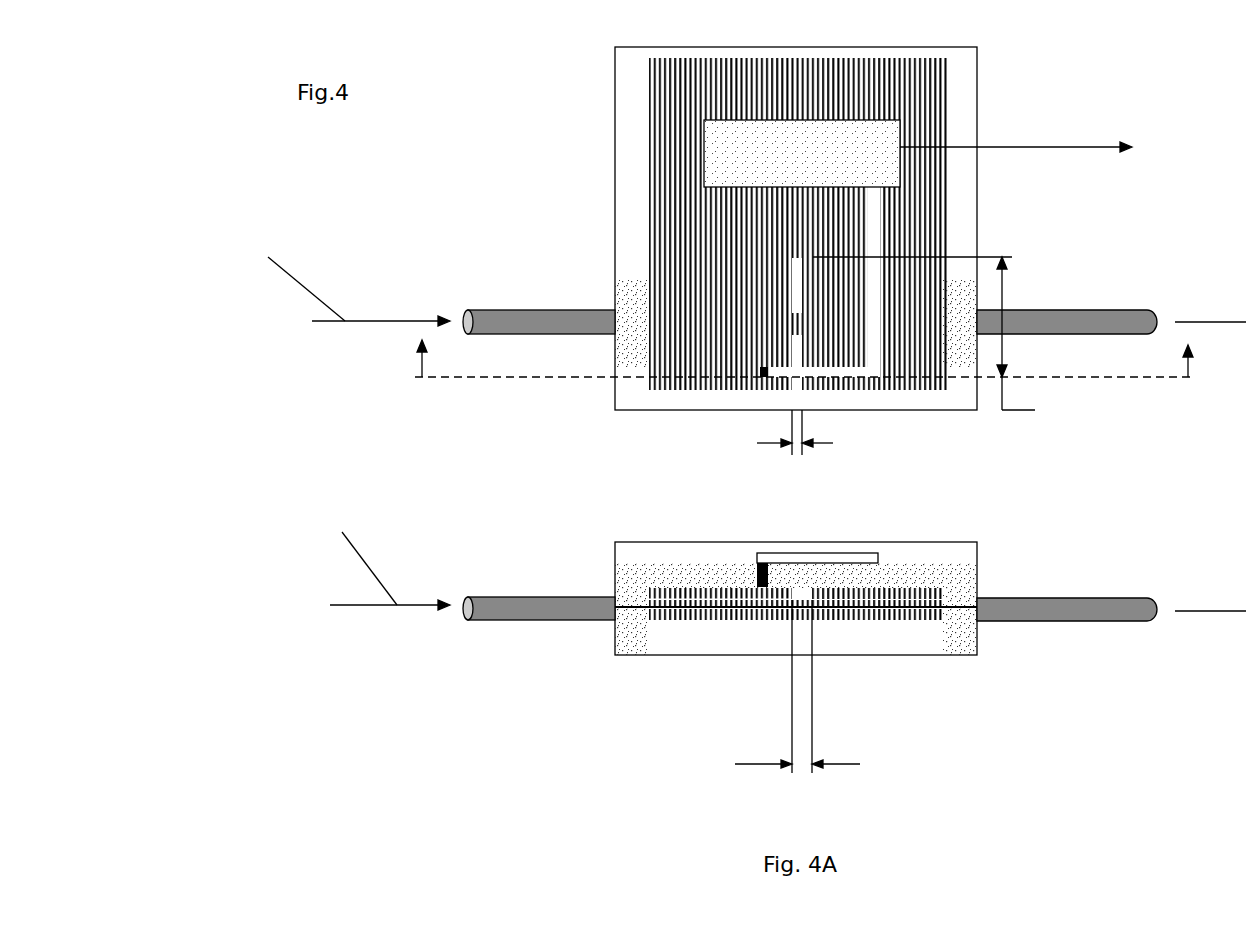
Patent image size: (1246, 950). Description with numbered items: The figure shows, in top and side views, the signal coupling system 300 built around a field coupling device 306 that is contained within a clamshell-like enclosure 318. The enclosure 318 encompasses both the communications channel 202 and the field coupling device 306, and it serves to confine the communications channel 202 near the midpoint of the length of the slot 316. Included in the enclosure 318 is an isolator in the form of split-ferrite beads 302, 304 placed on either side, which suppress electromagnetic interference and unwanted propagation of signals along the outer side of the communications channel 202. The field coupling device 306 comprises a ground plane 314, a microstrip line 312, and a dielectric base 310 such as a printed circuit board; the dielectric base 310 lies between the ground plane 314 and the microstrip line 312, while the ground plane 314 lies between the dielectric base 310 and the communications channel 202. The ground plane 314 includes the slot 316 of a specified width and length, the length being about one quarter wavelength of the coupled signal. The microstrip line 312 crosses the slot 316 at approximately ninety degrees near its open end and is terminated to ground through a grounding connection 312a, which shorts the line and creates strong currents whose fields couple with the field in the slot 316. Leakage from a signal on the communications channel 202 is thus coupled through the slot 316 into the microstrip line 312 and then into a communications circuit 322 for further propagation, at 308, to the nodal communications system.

In FIG. 4, the signal coupling system 300 is at (390, 42).
In FIG. 4A, the signal coupling system 300 is at (440, 790).
In FIG. 4, the split-ferrite bead 302 is at (615, 290).
In FIG. 4A, the split-ferrite bead 302 is at (615, 585).
In FIG. 4, the split-ferrite bead 304 is at (955, 366).
In FIG. 4A, the split-ferrite bead 304 is at (978, 575).
In FIG. 4, the field coupling device 306 is at (1030, 98).
In FIG. 4A, the field coupling device 306 is at (866, 702).
In FIG. 4, the further propagation path 308 is at (1045, 147).
In FIG. 4A, the dielectric base 310 is at (680, 575).
In FIG. 4, the microstrip line 312 is at (877, 302).
In FIG. 4A, the microstrip line 312 is at (762, 552).
In FIG. 4A, the grounding connection 312a is at (757, 577).
In FIG. 4A, the ground plane 314 is at (703, 597).
In FIG. 4, the slot 316 is at (792, 268).
In FIG. 4A, the slot 316 is at (802, 597).
In FIG. 4, the enclosure 318 is at (615, 125).
In FIG. 4A, the enclosure 318 is at (915, 655).
In FIG. 4, the communications circuit 322 is at (770, 126).
In FIG. 4, the communications channel 202 is at (1062, 320).
In FIG. 4A, the communications channel 202 is at (1112, 598).